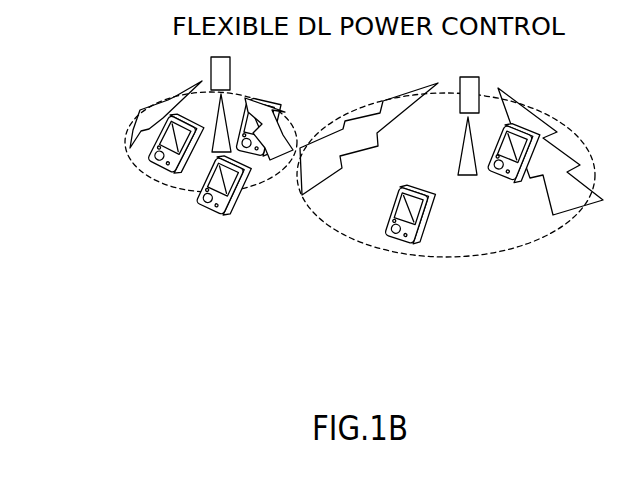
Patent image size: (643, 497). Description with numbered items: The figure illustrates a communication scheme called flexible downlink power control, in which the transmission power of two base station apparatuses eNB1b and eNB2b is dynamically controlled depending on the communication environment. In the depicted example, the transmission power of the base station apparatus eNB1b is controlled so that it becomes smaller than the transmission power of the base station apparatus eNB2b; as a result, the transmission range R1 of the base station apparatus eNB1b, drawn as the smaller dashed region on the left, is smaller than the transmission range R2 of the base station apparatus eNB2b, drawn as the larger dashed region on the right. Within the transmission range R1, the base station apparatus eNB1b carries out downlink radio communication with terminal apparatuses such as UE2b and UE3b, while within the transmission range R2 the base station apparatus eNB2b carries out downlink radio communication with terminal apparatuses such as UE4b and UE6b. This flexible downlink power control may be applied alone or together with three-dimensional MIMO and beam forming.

The base station apparatus eNB1b is at (210, 66).
The base station apparatus eNB2b is at (477, 83).
The terminal apparatus UE2b is at (213, 222).
The terminal apparatus UE3b is at (270, 101).
The terminal apparatus UE4b is at (400, 249).
The terminal apparatus UE6b is at (333, 117).
The transmission range R1 is at (143, 157).
The transmission range R2 is at (350, 238).